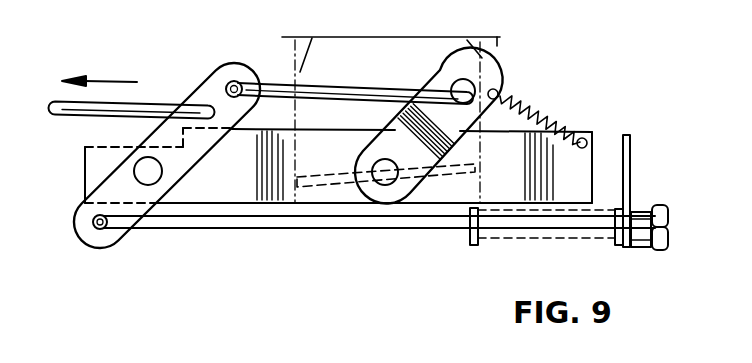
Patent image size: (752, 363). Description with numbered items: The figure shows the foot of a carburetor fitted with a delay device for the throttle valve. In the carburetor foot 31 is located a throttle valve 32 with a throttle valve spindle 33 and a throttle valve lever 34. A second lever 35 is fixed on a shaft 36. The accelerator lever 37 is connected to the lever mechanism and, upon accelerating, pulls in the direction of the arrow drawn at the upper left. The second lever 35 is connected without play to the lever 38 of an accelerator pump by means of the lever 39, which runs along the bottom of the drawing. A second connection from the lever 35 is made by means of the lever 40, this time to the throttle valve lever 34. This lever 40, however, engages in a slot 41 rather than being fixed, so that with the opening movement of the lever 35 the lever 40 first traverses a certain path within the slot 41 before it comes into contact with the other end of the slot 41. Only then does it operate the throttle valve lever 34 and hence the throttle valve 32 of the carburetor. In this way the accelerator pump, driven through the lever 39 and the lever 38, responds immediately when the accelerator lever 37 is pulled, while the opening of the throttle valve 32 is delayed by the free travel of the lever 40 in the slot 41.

The carburetor foot 31 is at (207, 182).
The throttle valve 32 is at (327, 180).
The throttle valve spindle 33 is at (385, 183).
The throttle valve lever 34 is at (447, 157).
The second lever 35 is at (213, 88).
The shaft 36 is at (143, 170).
The accelerator lever 37 is at (160, 107).
The accelerator pump lever 38 is at (628, 153).
The connecting lever 39 is at (242, 224).
The connecting lever 40 is at (265, 86).
The slot 41 is at (467, 87).